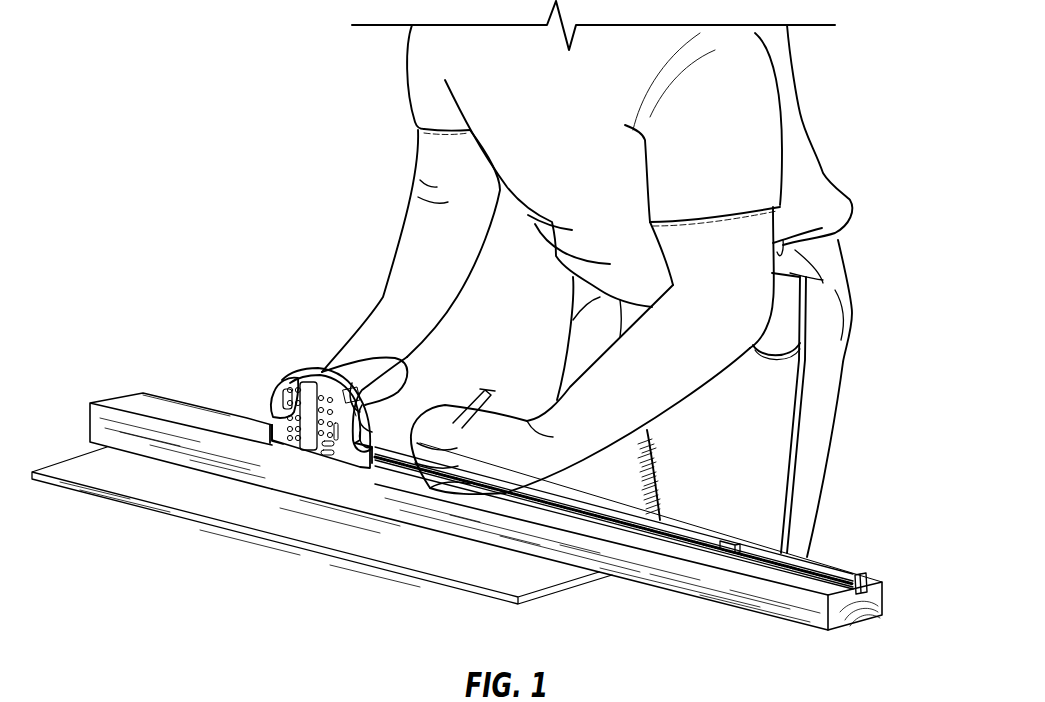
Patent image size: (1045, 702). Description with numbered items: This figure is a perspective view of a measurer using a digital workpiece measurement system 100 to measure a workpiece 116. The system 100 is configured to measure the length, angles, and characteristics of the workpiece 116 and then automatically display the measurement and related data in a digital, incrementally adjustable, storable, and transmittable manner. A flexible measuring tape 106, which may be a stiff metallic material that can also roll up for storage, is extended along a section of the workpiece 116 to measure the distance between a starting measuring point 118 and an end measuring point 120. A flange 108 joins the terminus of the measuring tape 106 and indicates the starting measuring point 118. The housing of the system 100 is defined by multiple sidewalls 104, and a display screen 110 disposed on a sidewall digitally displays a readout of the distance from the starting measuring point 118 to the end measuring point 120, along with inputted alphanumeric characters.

The digital workpiece measurement system 100 is at (333, 370).
The sidewalls 104 is at (247, 417).
The flexible measuring tape 106 is at (812, 570).
The flange 108 is at (868, 581).
The display screen 110 is at (280, 432).
The workpiece 116 is at (690, 583).
The starting measuring point 118 is at (865, 613).
The end measuring point 120 is at (350, 481).